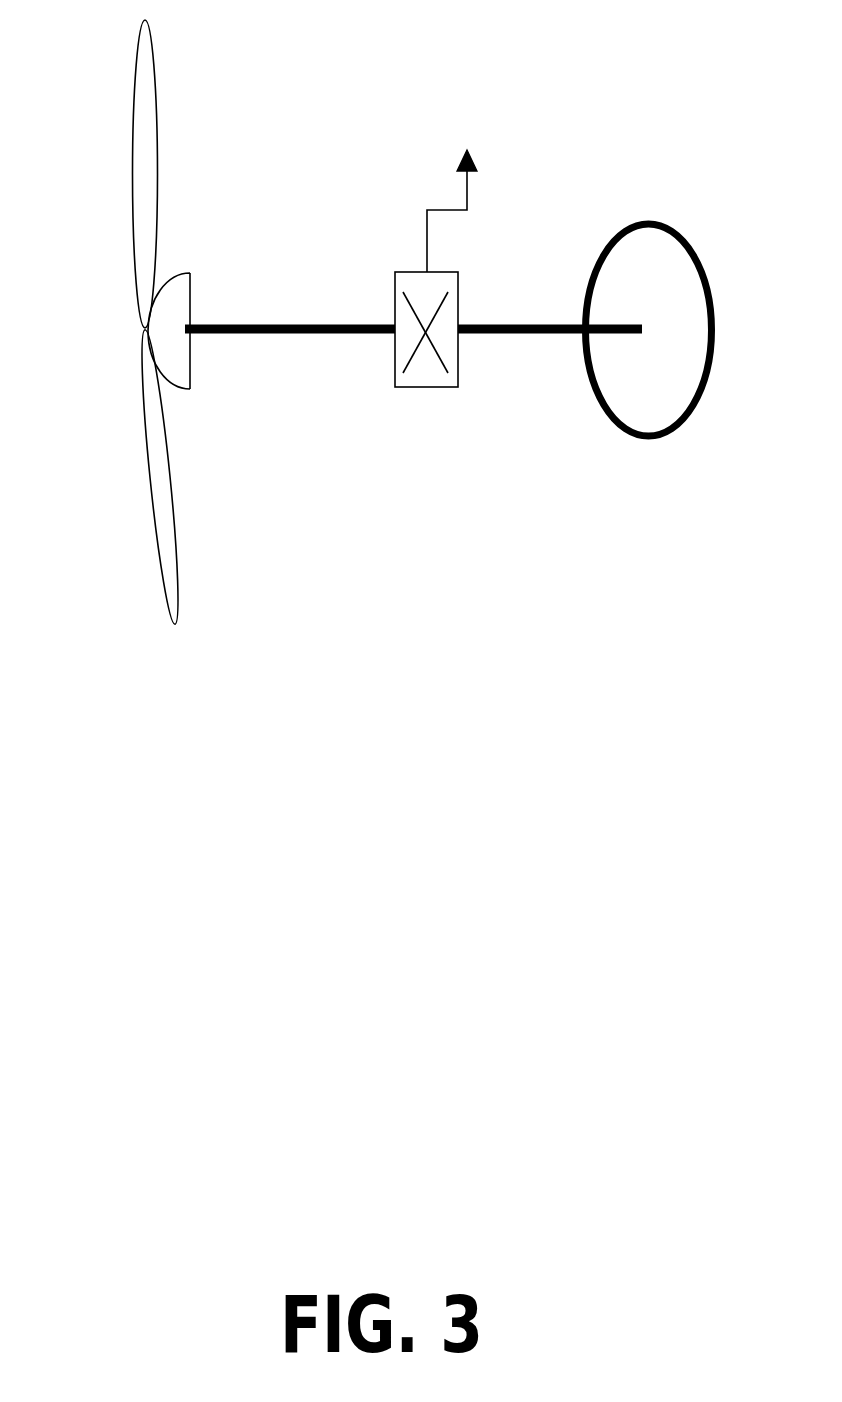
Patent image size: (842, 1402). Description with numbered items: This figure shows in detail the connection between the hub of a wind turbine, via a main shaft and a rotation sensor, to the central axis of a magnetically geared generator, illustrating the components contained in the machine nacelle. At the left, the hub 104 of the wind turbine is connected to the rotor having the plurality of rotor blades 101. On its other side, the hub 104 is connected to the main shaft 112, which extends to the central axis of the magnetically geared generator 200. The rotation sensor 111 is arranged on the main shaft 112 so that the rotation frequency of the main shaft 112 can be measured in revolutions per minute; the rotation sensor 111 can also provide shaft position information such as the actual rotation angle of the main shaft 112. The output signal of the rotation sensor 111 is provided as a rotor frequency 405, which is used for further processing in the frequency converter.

The rotor blades 101 is at (150, 475).
The hub 104 is at (180, 287).
The main shaft 112 is at (215, 334).
The rotation sensor 111 is at (427, 388).
The rotor frequency 405 is at (425, 187).
The magnetically geared generator 200 is at (693, 413).